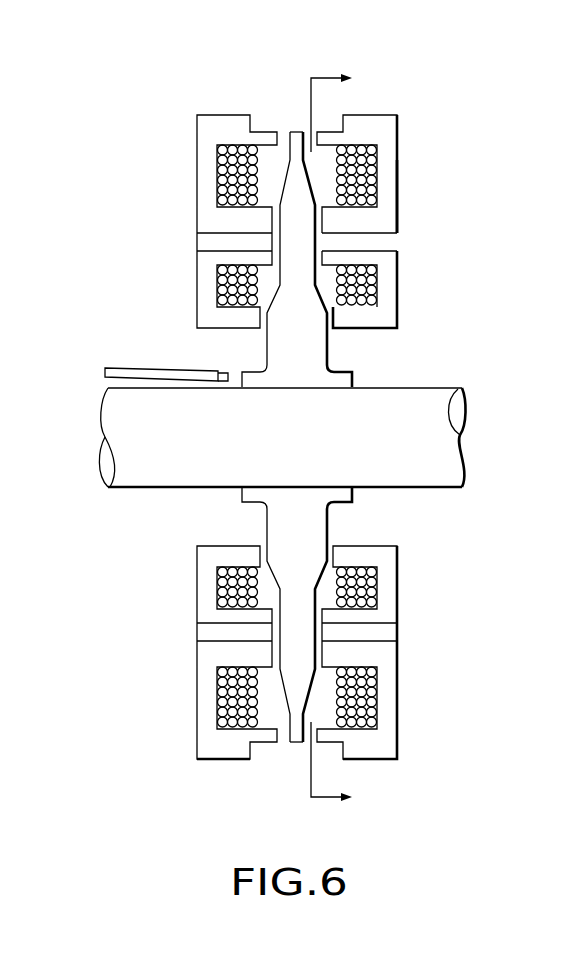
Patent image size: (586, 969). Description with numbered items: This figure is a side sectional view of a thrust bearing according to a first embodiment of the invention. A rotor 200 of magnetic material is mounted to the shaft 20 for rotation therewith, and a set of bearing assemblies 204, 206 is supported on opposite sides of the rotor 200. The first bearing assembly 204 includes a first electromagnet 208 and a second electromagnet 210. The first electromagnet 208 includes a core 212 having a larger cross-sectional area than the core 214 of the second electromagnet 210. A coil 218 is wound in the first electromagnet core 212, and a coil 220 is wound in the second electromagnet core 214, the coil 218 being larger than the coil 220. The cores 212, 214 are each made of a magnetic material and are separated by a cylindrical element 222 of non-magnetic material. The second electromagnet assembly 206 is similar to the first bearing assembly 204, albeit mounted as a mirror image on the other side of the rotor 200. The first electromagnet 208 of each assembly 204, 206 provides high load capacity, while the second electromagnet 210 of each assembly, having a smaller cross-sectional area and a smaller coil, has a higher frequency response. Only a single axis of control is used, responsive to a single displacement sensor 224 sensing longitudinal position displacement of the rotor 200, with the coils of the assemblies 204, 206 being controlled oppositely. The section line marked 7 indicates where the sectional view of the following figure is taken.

The shaft 20 is at (435, 485).
The rotor 200 is at (295, 128).
The first bearing assembly 204 is at (433, 195).
The second electromagnet assembly 206 is at (150, 122).
The first electromagnet 208 is at (397, 155).
The second electromagnet 210 is at (397, 290).
The core 212 is at (388, 220).
The core 214 is at (390, 322).
The coil 218 is at (398, 120).
The coil 220 is at (359, 308).
The cylindrical element 222 is at (388, 242).
The displacement sensor 224 is at (147, 365).
The section line 7- 7 is at (345, 437).